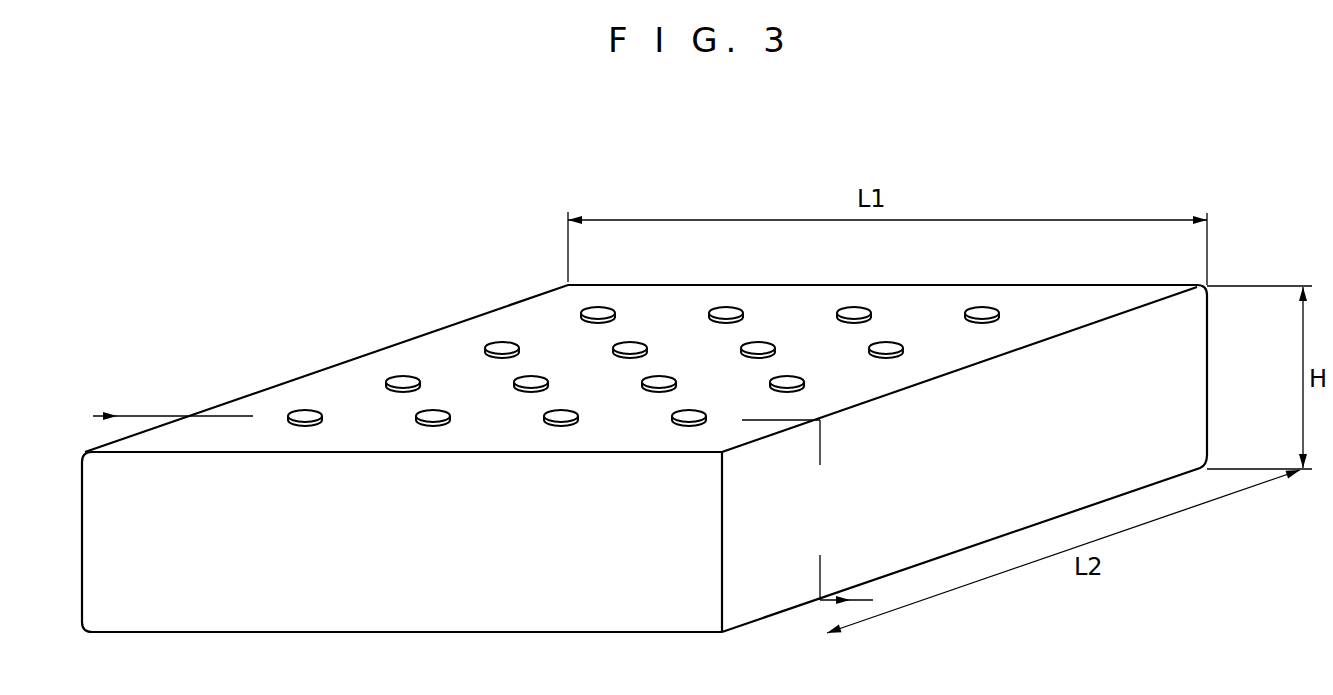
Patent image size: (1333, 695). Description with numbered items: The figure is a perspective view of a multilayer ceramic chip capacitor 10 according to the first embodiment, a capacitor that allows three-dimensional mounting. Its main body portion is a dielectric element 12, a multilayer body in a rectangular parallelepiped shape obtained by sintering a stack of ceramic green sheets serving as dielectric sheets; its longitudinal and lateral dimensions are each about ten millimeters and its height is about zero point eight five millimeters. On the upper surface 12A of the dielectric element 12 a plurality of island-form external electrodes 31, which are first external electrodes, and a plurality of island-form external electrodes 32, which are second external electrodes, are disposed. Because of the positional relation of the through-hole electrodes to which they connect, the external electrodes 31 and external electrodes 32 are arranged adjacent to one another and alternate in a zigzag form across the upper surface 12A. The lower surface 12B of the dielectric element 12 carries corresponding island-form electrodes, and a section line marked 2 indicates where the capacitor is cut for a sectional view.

The multilayer ceramic chip capacitor 10 is at (470, 258).
The dielectric element 12 is at (532, 293).
The upper surface 12A is at (505, 325).
The lower surface 12B is at (403, 633).
The external electrodes 31 is at (516, 383).
The external electrodes 32 is at (689, 411).
The section line 2- 2 is at (97, 420).